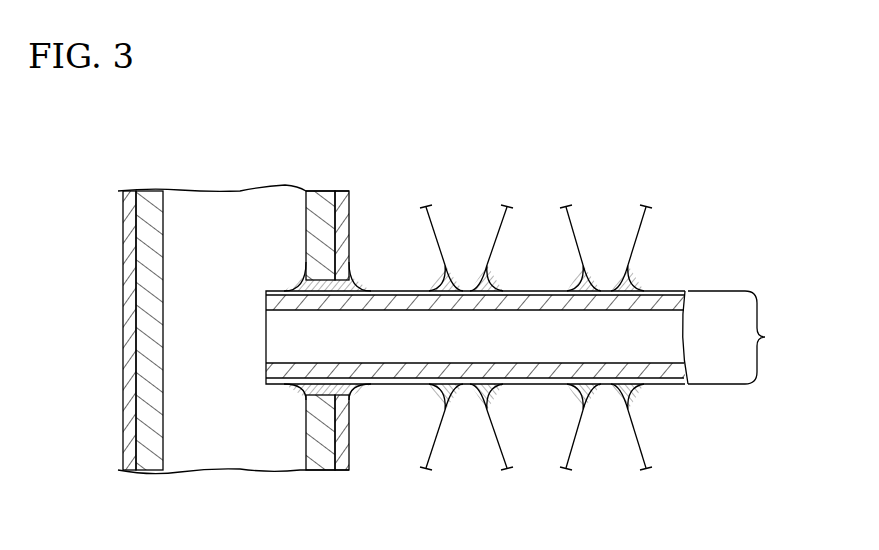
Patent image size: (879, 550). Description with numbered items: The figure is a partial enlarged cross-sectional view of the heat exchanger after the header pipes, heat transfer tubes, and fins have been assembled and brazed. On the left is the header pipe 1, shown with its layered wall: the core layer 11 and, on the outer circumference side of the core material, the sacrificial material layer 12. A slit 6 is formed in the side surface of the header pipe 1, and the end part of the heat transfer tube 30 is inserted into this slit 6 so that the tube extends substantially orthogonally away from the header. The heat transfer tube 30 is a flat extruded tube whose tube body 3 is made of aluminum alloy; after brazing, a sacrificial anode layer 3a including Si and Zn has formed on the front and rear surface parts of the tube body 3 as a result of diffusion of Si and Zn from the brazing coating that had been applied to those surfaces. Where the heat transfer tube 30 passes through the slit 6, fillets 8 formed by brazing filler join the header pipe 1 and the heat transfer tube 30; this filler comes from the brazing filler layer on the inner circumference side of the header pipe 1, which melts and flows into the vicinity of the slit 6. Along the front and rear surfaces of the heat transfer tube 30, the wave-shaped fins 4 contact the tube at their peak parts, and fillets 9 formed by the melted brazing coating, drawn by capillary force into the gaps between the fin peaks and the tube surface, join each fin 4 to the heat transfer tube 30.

The header pipe 1 is at (198, 297).
The core layer 11 is at (149, 189).
The sacrificial material layer 12 is at (125, 189).
The slit 6 is at (320, 396).
The fillet 8 is at (295, 285).
The tube body 3 is at (498, 343).
The sacrificial anode layer 3a is at (541, 290).
The heat transfer tube 30 is at (746, 337).
The fin 4 is at (432, 234).
The fillet 9 is at (442, 282).